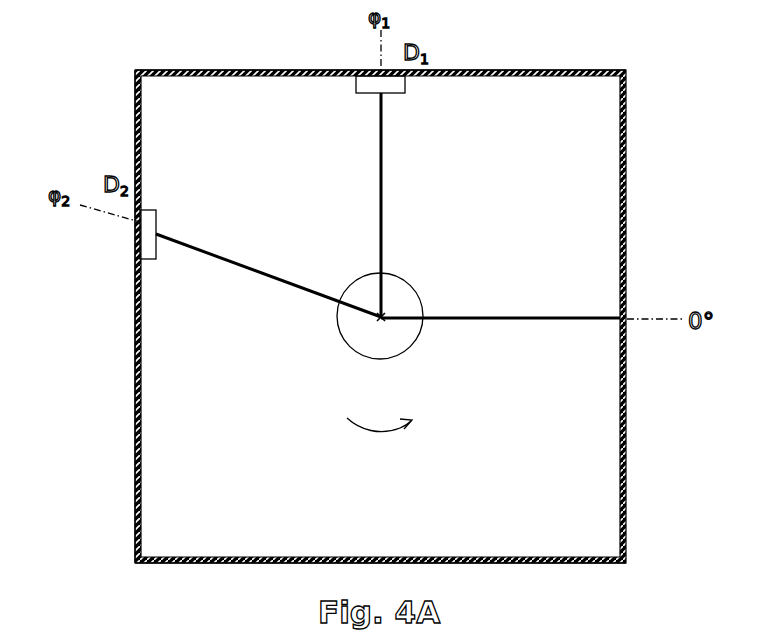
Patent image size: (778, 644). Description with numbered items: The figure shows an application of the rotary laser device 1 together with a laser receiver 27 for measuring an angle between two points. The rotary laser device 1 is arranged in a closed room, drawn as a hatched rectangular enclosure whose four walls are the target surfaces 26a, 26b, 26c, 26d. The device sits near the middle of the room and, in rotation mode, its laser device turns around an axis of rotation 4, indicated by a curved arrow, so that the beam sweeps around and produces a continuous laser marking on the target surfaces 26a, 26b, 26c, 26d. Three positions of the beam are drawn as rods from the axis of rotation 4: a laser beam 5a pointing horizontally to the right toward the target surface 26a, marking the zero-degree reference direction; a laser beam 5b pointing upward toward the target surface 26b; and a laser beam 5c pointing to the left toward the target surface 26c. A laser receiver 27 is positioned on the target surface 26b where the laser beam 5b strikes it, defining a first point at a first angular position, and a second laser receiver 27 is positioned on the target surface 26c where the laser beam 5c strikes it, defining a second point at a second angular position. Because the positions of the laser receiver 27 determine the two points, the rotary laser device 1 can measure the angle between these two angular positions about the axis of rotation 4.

The rotary laser device 1 is at (413, 291).
The axis of rotation 4 is at (380, 322).
The laser beam 5a is at (503, 321).
The laser beam 5b is at (383, 162).
The laser beam 5c is at (278, 277).
The target surface 26a is at (619, 459).
The target surface 26b is at (208, 78).
The target surface 26c is at (142, 436).
The target surface 26d is at (308, 555).
The laser receiver 27 is at (373, 88).